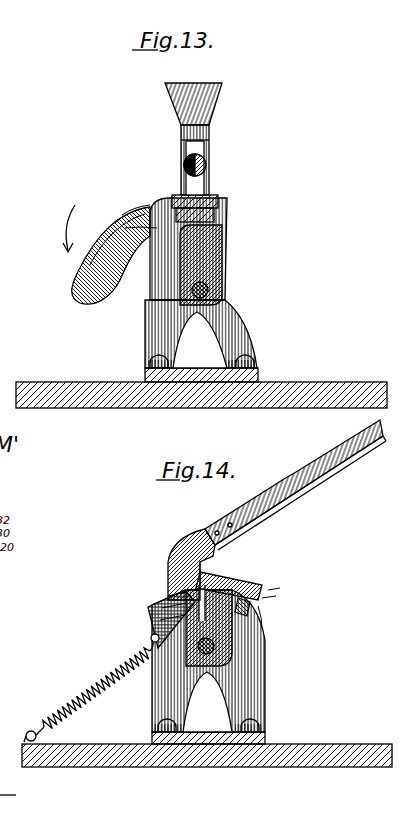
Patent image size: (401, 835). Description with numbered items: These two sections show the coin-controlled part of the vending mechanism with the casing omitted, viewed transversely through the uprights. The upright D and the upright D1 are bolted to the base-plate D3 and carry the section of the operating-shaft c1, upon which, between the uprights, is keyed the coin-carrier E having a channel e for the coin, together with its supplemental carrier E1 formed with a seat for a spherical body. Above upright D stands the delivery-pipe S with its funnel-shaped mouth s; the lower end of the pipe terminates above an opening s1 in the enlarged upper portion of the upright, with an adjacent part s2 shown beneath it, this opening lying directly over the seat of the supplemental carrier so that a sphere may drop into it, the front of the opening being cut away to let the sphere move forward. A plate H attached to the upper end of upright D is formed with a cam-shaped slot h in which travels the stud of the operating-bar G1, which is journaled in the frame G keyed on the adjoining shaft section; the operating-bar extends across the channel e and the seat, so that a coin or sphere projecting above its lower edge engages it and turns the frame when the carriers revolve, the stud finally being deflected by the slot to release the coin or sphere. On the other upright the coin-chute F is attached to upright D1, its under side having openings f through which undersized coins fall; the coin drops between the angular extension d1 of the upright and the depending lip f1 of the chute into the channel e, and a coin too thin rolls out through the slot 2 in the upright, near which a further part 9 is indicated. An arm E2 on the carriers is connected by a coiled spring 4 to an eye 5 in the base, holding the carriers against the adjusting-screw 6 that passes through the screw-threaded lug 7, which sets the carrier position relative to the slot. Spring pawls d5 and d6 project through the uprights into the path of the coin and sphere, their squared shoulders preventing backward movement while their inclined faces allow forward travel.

In FIG. 13, the delivery-pipe S is at (205, 164).
In FIG. 13, the funnel-shaped mouth s is at (190, 110).
In FIG. 13, the opening s1 is at (218, 200).
In FIG. 13, the lower collar block s2 is at (224, 214).
In FIG. 13, the supplemental carrier E1 is at (226, 250).
In FIG. 13, the section of the operating-shaft c1 is at (210, 288).
In FIG. 14, the section of the operating-shaft c1 is at (226, 633).
In FIG. 13, the upright D is at (247, 320).
In FIG. 13, the base-plate D3 is at (257, 376).
In FIG. 14, the base-plate D3 is at (268, 740).
In FIG. 14, the upright D1 is at (268, 692).
In FIG. 13, the plate H is at (90, 280).
In FIG. 13, the cam-shaped slot h is at (137, 241).
In FIG. 13, the frame G is at (152, 213).
In FIG. 14, the frame G is at (241, 585).
In FIG. 14, the operating-bar G1 is at (290, 586).
In FIG. 13, the spring pawl d6 is at (157, 228).
In FIG. 14, the angular extension d1 is at (192, 532).
In FIG. 14, the spring pawl d5 is at (266, 612).
In FIG. 14, the coin-chute F is at (294, 482).
In FIG. 14, the openings f is at (283, 500).
In FIG. 14, the depending lip f1 is at (203, 563).
In FIG. 14, the coin-carrier E is at (272, 628).
In FIG. 14, the arm E2 is at (150, 636).
In FIG. 14, the channel e is at (160, 609).
In FIG. 14, the slot 2 is at (232, 593).
In FIG. 14, the coiled spring 4 is at (98, 684).
In FIG. 14, the eye 5 is at (40, 738).
In FIG. 14, the adjusting-screw 6 is at (158, 621).
In FIG. 14, the screw-threaded lug 7 is at (166, 596).
In FIG. 14, the pin 9 is at (268, 590).